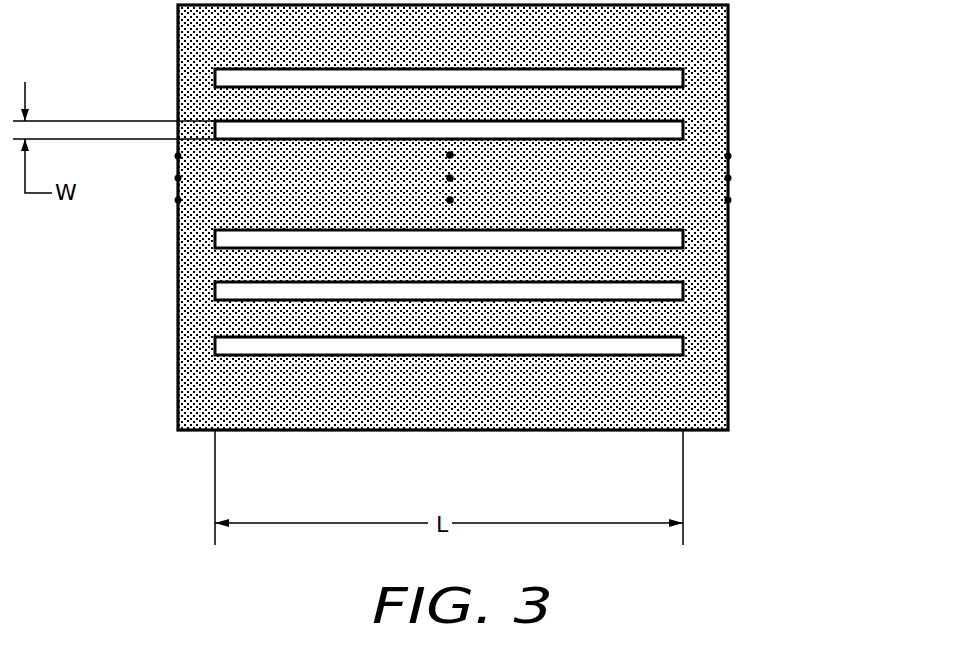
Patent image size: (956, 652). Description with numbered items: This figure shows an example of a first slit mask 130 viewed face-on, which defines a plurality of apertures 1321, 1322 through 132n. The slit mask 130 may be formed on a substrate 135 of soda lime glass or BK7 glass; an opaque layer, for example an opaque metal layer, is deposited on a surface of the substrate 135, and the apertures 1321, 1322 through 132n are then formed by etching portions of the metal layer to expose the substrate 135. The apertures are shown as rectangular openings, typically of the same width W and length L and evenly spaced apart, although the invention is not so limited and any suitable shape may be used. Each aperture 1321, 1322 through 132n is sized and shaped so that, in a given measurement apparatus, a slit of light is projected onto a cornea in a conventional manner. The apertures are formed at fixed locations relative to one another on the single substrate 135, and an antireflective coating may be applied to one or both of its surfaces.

The first slit mask 130 is at (178, 408).
The substrate 135 is at (178, 78).
The aperture 1321 is at (683, 76).
The aperture 1322 is at (683, 131).
The aperture 132n is at (683, 347).